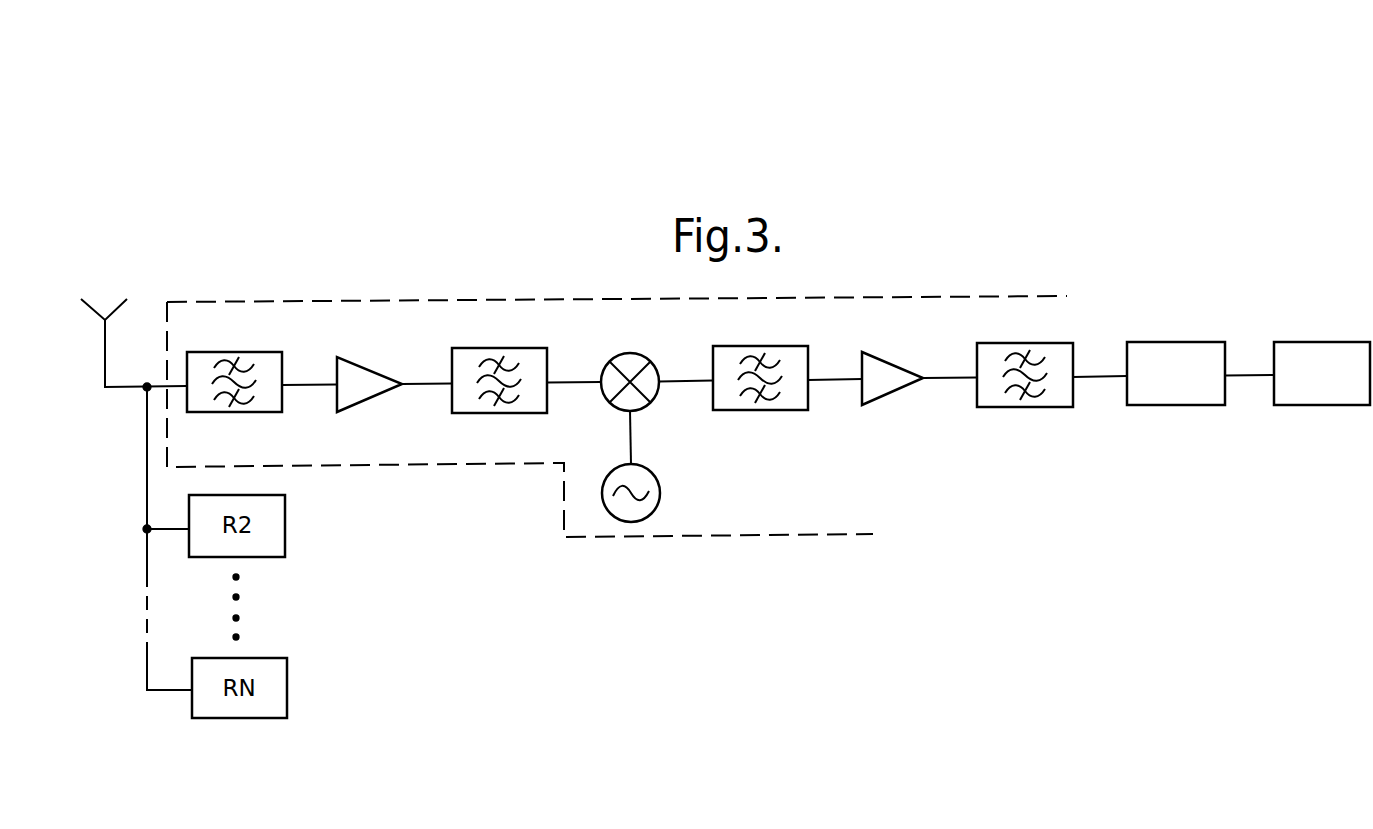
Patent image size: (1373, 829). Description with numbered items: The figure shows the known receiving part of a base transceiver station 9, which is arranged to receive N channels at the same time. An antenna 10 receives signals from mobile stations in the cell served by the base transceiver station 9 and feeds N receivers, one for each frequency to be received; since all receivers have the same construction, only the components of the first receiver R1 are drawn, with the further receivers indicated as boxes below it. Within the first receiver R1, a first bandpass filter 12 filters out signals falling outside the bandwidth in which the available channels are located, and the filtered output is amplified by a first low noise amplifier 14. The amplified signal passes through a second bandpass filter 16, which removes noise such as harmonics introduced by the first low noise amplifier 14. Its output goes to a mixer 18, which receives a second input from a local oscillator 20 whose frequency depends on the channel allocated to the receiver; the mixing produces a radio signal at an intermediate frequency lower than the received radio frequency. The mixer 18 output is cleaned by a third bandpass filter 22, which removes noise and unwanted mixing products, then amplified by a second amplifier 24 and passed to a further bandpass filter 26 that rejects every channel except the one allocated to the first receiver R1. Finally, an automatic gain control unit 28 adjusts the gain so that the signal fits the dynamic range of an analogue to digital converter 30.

The base transceiver station 9 is at (503, 296).
The first receiver R1 is at (313, 295).
The antenna 10 is at (103, 342).
The first bandpass filter 12 is at (253, 352).
The first low noise amplifier 14 is at (370, 397).
The second bandpass filter 16 is at (505, 348).
The mixer 18 is at (643, 356).
The local oscillator 20 is at (660, 491).
The third bandpass filter 22 is at (765, 346).
The second amplifier 24 is at (890, 394).
The further bandpass filter 26 is at (1030, 343).
The automatic gain control unit 28 is at (1175, 342).
The analogue to digital converter 30 is at (1323, 342).